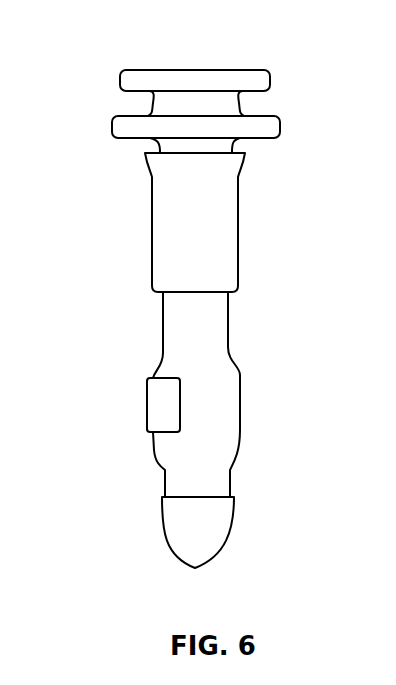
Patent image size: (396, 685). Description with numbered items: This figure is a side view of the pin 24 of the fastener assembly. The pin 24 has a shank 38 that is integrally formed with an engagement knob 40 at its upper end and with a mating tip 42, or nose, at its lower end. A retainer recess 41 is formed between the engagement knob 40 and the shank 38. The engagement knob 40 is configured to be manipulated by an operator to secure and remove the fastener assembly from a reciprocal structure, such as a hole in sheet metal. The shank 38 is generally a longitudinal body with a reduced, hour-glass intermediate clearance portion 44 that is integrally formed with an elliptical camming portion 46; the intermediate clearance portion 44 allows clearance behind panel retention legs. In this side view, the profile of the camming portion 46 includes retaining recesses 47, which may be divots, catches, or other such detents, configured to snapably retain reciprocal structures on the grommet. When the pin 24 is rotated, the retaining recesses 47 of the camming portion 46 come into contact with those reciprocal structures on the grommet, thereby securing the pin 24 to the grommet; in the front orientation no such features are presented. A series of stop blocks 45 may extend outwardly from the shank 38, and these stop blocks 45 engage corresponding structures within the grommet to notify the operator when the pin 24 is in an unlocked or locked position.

The pin 24 is at (138, 48).
The shank 38 is at (242, 237).
The engagement knob 40 is at (233, 70).
The retainer recess 41 is at (237, 144).
The mating tip 42 is at (222, 518).
The intermediate clearance portion 44 is at (215, 333).
The stop blocks 45 is at (165, 398).
The camming portion 46 is at (233, 468).
The retaining recesses 47 is at (159, 470).